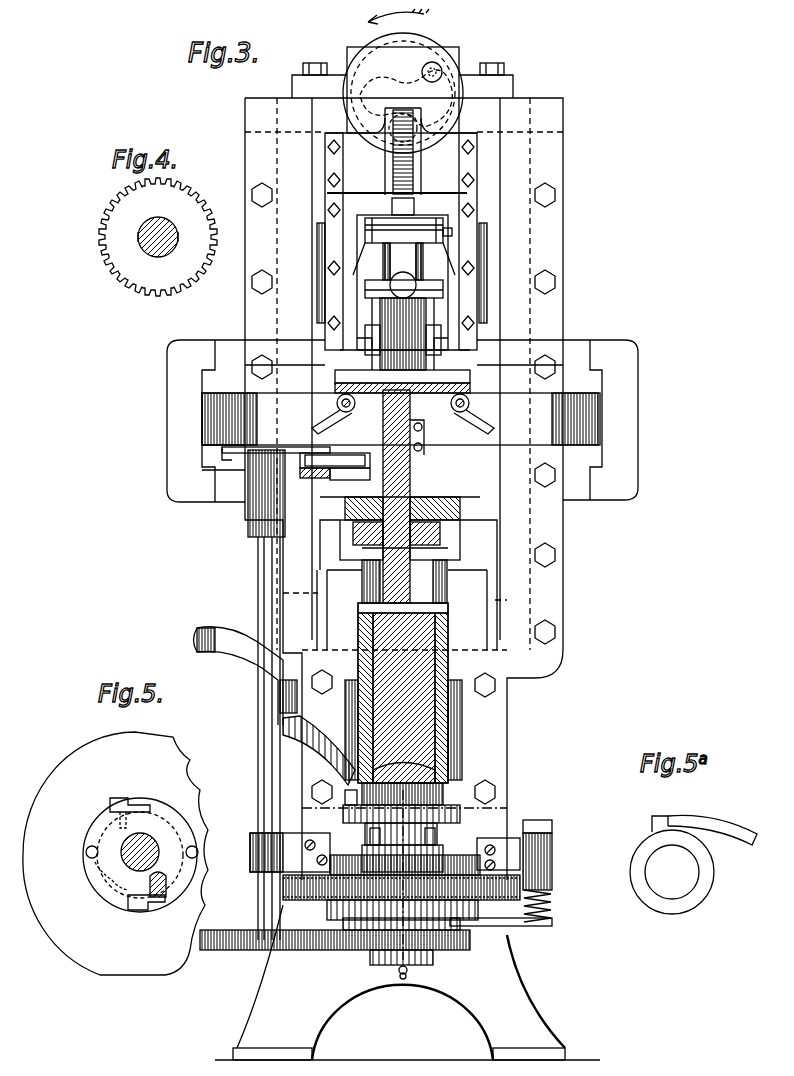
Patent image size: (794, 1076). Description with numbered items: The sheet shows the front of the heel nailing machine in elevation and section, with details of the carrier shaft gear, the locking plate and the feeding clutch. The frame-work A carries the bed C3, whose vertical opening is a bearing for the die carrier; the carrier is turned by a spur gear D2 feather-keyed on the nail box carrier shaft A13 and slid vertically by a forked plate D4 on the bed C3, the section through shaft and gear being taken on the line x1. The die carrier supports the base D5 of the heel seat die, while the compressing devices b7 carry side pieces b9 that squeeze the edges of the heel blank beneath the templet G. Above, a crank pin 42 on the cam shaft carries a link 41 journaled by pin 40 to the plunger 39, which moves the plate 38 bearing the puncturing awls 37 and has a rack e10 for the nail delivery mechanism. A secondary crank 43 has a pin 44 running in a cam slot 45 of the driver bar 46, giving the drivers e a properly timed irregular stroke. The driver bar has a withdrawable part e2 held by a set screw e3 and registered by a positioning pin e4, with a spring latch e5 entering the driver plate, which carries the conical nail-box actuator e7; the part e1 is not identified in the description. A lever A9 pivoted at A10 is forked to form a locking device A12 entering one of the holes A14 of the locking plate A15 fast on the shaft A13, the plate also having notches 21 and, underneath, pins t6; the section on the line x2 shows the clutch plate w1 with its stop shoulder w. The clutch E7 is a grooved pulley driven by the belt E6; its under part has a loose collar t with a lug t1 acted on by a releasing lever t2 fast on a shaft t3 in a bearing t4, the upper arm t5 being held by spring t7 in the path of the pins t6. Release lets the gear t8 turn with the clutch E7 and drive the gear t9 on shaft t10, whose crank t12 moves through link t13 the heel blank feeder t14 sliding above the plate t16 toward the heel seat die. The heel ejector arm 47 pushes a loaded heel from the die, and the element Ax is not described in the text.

In FIG. 3, the cam slot 45 is at (363, 85).
In FIG. 3, the secondary crank 43 is at (408, 50).
In FIG. 3, the pin 44 is at (438, 70).
In FIG. 3, the driver bar 46 is at (463, 72).
In FIG. 3, the crank pin 42 is at (420, 125).
In FIG. 3, the rack e10 is at (395, 158).
In FIG. 3, the positioning pin e4 is at (420, 198).
In FIG. 3, the link 41 is at (430, 205).
In FIG. 3, the set screw e3 is at (442, 232).
In FIG. 3, the plunger 39 is at (452, 252).
In FIG. 3, the pin 40 is at (440, 280).
In FIG. 3, the spring latch e5 is at (443, 310).
In FIG. 3, the drivers e is at (452, 298).
In FIG. 3, the awl plate 38 is at (445, 340).
In FIG. 3, the withdrawable part of driver bar e2 is at (380, 245).
In FIG. 3, the lower collar e1 is at (378, 292).
In FIG. 3, the nail-box actuator e7 is at (378, 355).
In FIG. 3, the puncturing awls 37 is at (440, 378).
In FIG. 3, the templet G is at (560, 345).
In FIG. 3, the frame-work A is at (585, 360).
In FIG. 3, the mold carriers b7 is at (580, 415).
In FIG. 3, the side pieces b9 is at (330, 413).
In FIG. 3, the base of heel seat die D5 is at (457, 480).
In FIG. 3, the link t13 is at (288, 446).
In FIG. 3, the crank t12 is at (232, 453).
In FIG. 3, the heel blank feeder t14 is at (317, 470).
In FIG. 3, the plate t16 is at (318, 478).
In FIG. 3, the shaft t10 is at (258, 780).
In FIG. 3, the heel ejector arm 47 is at (334, 482).
In FIG. 3, the section line x1 is at (447, 497).
In FIG. 3, the spur gear D2 is at (452, 508).
In FIG. 4, the spur gear D2 is at (158, 251).
In FIG. 3, the forked plate D4 is at (462, 528).
In FIG. 3, the bed C3 is at (490, 558).
In FIG. 3, the nail box carrier shaft A13 is at (383, 548).
In FIG. 4, the nail box carrier shaft A13 is at (140, 240).
In FIG. 5, the nail box carrier shaft A13 is at (127, 867).
In FIG. 3, the sleeve Ax is at (447, 728).
In FIG. 3, the lever A9 is at (285, 735).
In FIG. 3, the pivot A10 is at (265, 700).
In FIG. 3, the locking device A12 is at (345, 800).
In FIG. 3, the locking plate A15 is at (343, 812).
In FIG. 5, the locking plate A15 is at (104, 890).
In FIG. 3, the notches 21 is at (400, 813).
In FIG. 5, the notches 21 is at (143, 797).
In FIG. 3, the section line x2 is at (505, 813).
In FIG. 3, the pins t6 is at (370, 833).
In FIG. 5, the pins t6 is at (55, 955).
In FIG. 3, the stop shoulder w is at (432, 850).
In FIG. 5, the stop shoulder w is at (157, 803).
In FIG. 3, the clutch plate w1 is at (290, 852).
In FIG. 5, the clutch plate w1 is at (128, 890).
In FIG. 3, the arm t5 is at (551, 822).
In FIG. 3, the bearing t4 is at (552, 856).
In FIG. 3, the shaft t3 is at (546, 886).
In FIG. 3, the spring t7 is at (550, 904).
In FIG. 3, the releasing lever t2 is at (538, 926).
In FIG. 5A, the releasing lever t2 is at (723, 820).
In FIG. 3, the belt E6 is at (498, 920).
In FIG. 3, the loose collar t is at (365, 930).
In FIG. 5A, the loose collar t is at (636, 866).
In FIG. 3, the gear t9 is at (226, 950).
In FIG. 3, the clutch gear t8 is at (450, 952).
In FIG. 3, the clutch E7 is at (300, 926).
In FIG. 5, the clutch E7 is at (115, 871).
In FIG. 5, the holes A14 is at (86, 852).
In FIG. 5A, the lug t1 is at (682, 818).